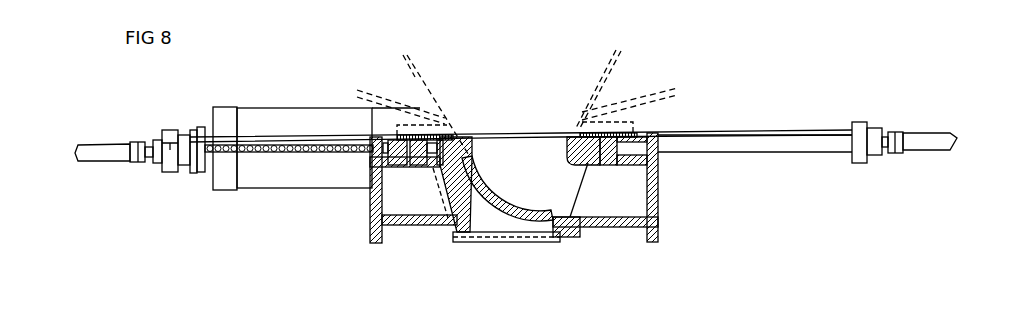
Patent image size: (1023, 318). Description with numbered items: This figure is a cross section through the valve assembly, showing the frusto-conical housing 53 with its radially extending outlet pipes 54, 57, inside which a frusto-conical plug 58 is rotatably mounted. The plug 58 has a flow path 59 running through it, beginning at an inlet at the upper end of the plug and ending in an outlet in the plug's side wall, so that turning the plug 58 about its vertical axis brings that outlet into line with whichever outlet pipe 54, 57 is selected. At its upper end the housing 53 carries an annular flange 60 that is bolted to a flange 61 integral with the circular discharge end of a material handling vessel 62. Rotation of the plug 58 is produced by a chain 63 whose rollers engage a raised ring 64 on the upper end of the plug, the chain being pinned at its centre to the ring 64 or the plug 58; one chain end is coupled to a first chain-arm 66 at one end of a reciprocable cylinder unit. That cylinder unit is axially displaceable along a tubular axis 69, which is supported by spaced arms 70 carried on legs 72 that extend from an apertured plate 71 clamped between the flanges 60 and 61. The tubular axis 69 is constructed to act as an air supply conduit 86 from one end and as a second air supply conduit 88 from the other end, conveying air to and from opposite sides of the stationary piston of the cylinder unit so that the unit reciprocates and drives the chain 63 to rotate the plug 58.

The frusto-conical housing 53 is at (453, 232).
The outlet pipe 54 is at (640, 193).
The outlet pipe 57 is at (385, 204).
The frusto-conical plug 58 is at (470, 208).
The flow path 59 is at (537, 180).
The annular flange 60 is at (645, 133).
The flange 61 is at (653, 95).
The material handling vessel 62 is at (425, 75).
The chain 63 is at (252, 153).
The raised ring 64 is at (460, 140).
The first chain-arm 66 is at (192, 135).
The tubular axis 69 is at (805, 147).
The arms 70 is at (172, 175).
The plate 71 is at (558, 137).
The legs 72 is at (293, 137).
The air supply conduit 86 is at (957, 138).
The air supply conduit 88 is at (76, 153).